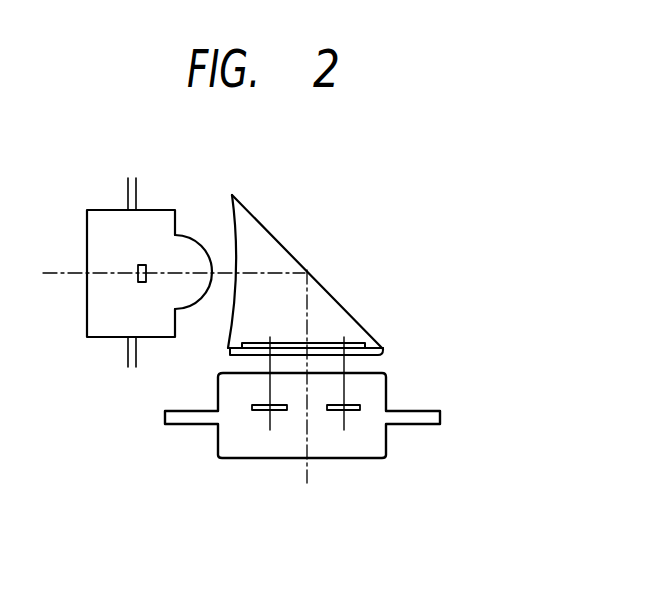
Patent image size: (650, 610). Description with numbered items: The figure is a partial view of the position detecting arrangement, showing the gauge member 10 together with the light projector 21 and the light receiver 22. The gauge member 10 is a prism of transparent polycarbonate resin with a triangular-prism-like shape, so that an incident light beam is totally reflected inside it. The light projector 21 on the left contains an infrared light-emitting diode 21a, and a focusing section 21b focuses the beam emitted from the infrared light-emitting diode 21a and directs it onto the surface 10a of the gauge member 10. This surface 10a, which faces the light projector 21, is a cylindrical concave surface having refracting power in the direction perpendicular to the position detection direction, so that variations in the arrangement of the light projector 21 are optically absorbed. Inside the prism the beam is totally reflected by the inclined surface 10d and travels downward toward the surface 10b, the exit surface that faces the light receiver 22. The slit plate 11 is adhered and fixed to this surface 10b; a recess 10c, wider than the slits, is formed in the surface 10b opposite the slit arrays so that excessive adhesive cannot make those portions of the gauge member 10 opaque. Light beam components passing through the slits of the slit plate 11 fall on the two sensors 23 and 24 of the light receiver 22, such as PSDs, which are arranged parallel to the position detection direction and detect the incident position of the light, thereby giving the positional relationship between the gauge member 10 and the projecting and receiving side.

The gauge member 10 is at (340, 246).
The surface 10a is at (240, 250).
The surface 10b is at (373, 343).
The recess 10c is at (341, 347).
The inclined surface 10d is at (300, 262).
The slit plate 11 is at (372, 357).
The light projector 21 is at (148, 180).
The infrared light-emitting diode 21a is at (140, 265).
The focusing section 21b is at (197, 240).
The light receiver 22 is at (302, 459).
The sensor 23 is at (270, 430).
The sensor 24 is at (344, 430).